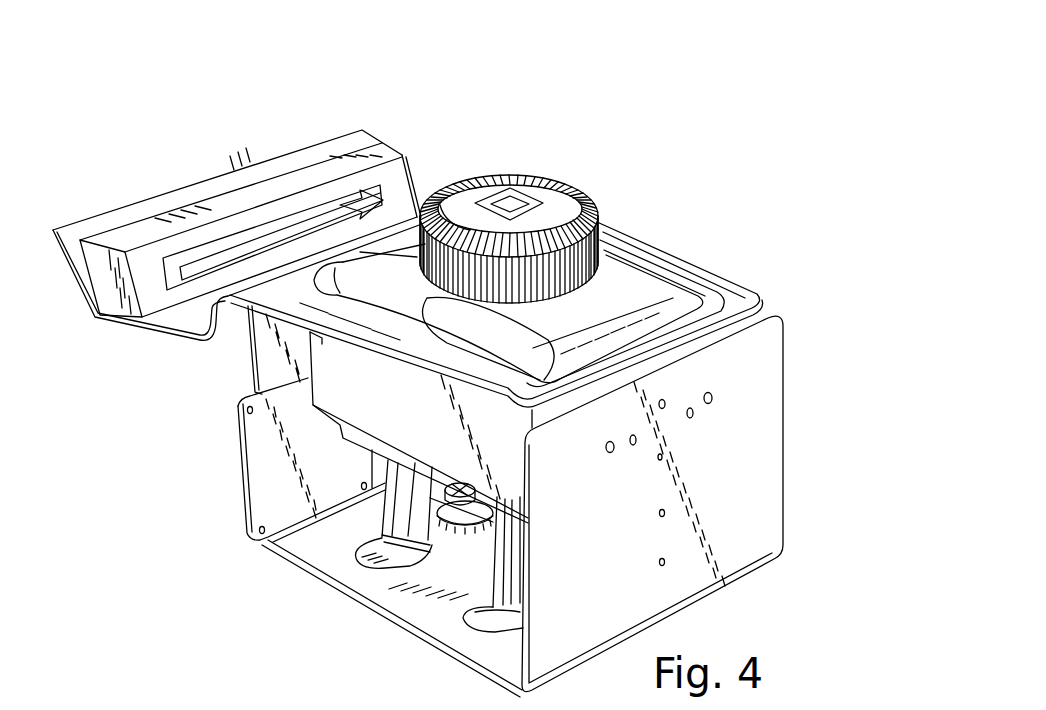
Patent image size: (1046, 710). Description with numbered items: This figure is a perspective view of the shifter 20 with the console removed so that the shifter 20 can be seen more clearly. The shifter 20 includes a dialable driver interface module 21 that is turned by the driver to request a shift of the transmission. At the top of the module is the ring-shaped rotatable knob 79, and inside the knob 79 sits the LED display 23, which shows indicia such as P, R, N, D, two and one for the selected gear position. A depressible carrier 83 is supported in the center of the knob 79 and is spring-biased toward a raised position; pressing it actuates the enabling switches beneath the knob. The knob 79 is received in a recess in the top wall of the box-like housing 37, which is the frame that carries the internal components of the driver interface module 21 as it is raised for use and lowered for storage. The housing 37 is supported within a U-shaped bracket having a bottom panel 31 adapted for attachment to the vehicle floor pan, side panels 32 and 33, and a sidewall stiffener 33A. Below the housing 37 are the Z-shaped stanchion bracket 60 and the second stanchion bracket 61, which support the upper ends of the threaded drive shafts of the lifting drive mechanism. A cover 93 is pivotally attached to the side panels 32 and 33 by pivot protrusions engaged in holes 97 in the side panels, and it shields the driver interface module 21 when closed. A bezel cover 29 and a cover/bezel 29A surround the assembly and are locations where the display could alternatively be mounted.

The shifter 20 is at (663, 145).
The driver interface module 21 is at (474, 176).
The LED display 23 is at (517, 193).
The bezel cover 29 is at (240, 178).
The cover/bezel 29A is at (703, 294).
The bottom panel 31 is at (463, 662).
The side panel 32 is at (784, 430).
The side panel 33 is at (250, 374).
The sidewall stiffener 33A is at (256, 462).
The box-like housing 37 is at (622, 292).
The Z-shaped stanchion bracket 60 is at (363, 558).
The second stanchion bracket 61 is at (463, 623).
The knob 79 is at (590, 195).
The depressible carrier 83 is at (465, 210).
The cover 93 is at (412, 432).
The holes 97 is at (610, 453).